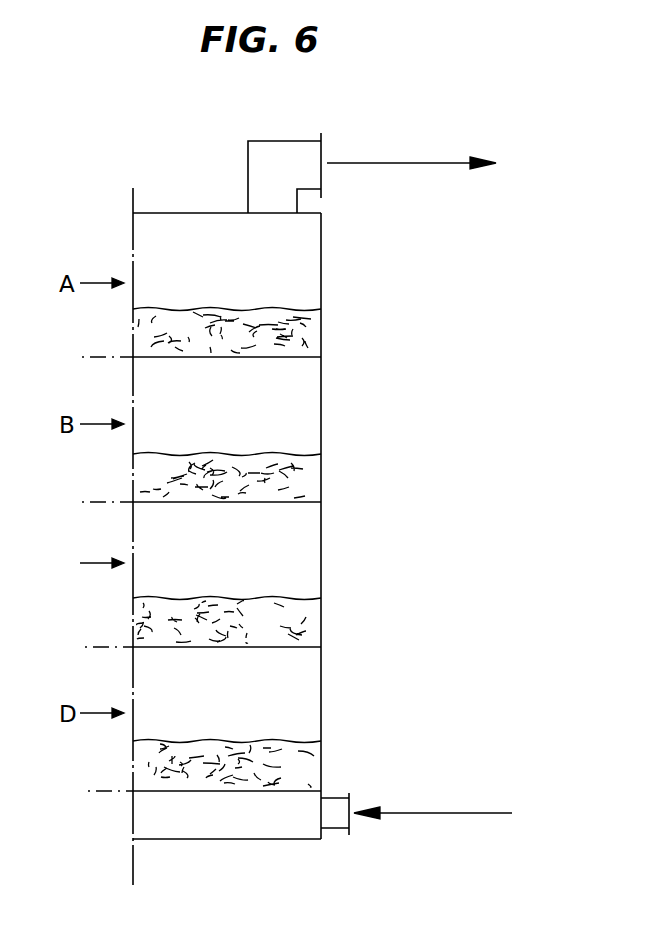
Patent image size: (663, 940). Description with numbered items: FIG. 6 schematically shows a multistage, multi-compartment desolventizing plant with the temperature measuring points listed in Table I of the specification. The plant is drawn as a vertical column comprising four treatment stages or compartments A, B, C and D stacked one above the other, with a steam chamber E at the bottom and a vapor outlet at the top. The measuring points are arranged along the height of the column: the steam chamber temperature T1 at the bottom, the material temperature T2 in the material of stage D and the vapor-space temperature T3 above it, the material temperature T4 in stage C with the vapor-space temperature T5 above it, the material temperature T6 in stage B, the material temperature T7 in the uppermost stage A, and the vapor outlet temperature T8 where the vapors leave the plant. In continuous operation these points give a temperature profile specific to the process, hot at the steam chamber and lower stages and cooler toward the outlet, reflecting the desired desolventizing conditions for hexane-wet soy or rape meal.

The vapor outlet temperature measuring point T8 is at (293, 160).
The temperature measuring point in the material of stage A T7 is at (300, 332).
The temperature measuring point in the material of stage B T6 is at (295, 476).
The temperature measuring point in the vapor space of stage C T5 is at (302, 552).
The temperature measuring point in the material of stage C T4 is at (300, 625).
The temperature measuring point in the vapor space of stage D T3 is at (302, 706).
The temperature measuring point in the material of stage D T2 is at (300, 770).
The steam chamber temperature measuring point T1 is at (290, 821).